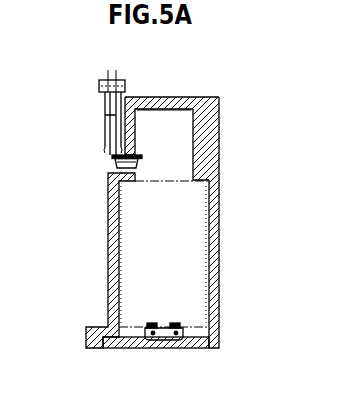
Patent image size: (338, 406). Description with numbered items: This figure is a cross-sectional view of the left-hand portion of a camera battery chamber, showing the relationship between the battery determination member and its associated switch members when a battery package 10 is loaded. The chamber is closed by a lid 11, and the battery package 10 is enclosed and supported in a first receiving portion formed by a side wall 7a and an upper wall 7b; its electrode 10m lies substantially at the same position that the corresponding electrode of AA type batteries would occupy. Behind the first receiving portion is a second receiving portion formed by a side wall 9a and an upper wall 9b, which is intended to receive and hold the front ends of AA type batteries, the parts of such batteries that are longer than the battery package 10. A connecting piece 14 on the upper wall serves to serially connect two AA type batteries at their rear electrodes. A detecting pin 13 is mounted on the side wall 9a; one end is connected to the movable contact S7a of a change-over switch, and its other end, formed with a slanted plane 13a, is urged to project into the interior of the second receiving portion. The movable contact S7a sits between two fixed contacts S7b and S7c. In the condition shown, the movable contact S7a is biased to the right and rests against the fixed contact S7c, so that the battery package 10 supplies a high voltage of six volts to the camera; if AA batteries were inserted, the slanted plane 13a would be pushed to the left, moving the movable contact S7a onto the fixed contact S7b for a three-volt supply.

The movable contact S7a is at (108, 113).
The fixed contact S7b is at (126, 100).
The fixed contact S7c is at (107, 103).
The detecting pin 13 is at (113, 158).
The slanted plane 13a is at (142, 161).
The connecting piece 14 is at (178, 111).
The side wall 9a is at (194, 152).
The upper wall 9b is at (200, 112).
The battery package 10 is at (210, 227).
The electrode 10m is at (193, 348).
The lid 11 is at (132, 343).
The side wall 7a is at (121, 261).
The upper wall 7b is at (128, 181).